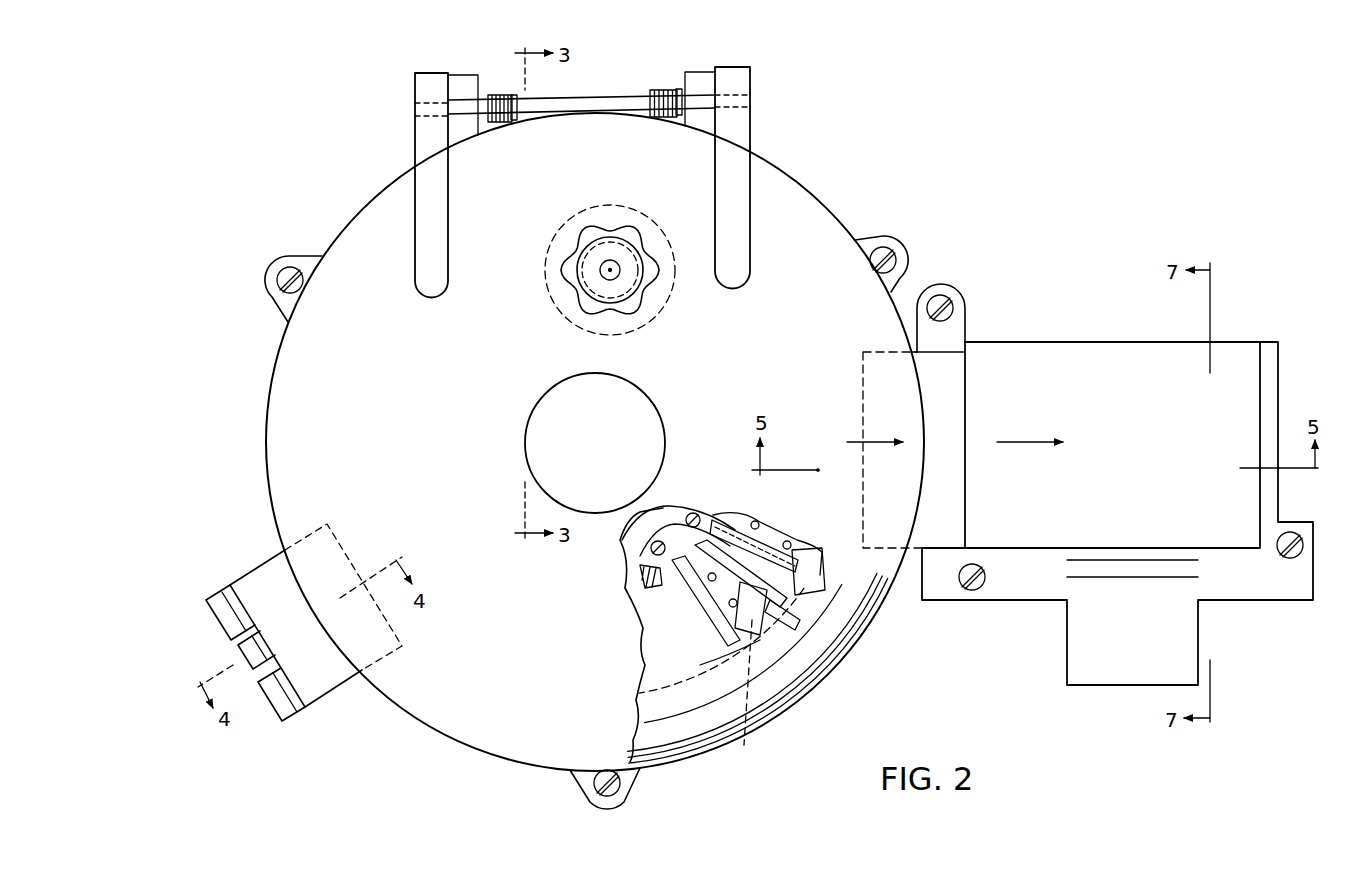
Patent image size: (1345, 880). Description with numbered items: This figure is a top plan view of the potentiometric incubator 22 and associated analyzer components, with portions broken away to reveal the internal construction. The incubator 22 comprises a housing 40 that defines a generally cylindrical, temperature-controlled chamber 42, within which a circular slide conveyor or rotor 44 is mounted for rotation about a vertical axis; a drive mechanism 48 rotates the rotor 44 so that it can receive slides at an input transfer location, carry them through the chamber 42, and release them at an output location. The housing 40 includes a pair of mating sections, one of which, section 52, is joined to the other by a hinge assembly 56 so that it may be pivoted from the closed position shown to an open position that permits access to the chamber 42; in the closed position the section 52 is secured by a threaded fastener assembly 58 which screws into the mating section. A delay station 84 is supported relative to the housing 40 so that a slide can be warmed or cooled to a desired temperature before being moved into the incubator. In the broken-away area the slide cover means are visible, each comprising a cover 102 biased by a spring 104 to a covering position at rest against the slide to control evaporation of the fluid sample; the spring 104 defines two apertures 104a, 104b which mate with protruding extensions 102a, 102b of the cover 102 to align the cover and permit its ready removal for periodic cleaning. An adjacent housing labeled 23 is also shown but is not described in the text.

The incubator 22 is at (345, 212).
The motor housing 23 is at (1002, 333).
The housing 40 is at (438, 697).
The temperature-controlled chamber 42 is at (815, 578).
The rotor 44 is at (795, 622).
The drive mechanism 48 is at (664, 306).
The housing section 52 is at (440, 484).
The hinge assembly 56 is at (757, 82).
The threaded fastener assembly 58 is at (609, 457).
The delay station 84 is at (250, 562).
The cover 102 is at (742, 743).
The protruding extension 102a is at (778, 532).
The protruding extension 102b is at (725, 517).
The spring 104 is at (760, 630).
The aperture 104a is at (645, 672).
The aperture 104b is at (650, 625).